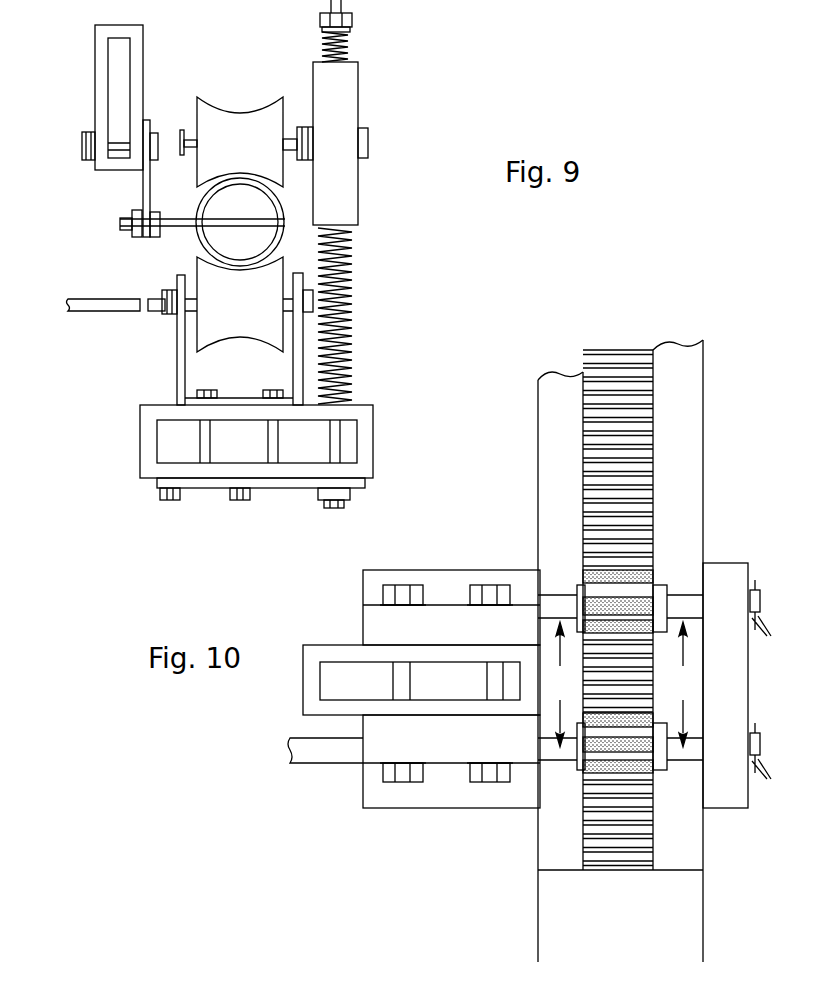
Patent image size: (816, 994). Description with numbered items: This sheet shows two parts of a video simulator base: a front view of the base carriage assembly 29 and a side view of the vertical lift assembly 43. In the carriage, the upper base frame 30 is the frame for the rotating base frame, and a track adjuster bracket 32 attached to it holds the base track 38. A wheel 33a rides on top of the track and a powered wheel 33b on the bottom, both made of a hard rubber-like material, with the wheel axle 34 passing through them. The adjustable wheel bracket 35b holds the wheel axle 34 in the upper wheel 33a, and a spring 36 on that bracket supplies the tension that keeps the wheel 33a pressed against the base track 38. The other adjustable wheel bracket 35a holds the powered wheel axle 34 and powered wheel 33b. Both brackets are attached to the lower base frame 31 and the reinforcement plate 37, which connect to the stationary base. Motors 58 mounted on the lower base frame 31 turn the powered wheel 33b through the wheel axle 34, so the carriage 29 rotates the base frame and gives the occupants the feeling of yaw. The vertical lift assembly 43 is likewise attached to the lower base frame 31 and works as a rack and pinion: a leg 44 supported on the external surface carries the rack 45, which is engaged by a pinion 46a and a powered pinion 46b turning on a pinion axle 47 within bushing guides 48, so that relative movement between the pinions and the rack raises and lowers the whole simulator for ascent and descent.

In FIG. 9, the base carriage assembly 29 is at (394, 246).
In FIG. 9, the upper base frame 30 is at (145, 38).
In FIG. 9, the lower base frame 31 is at (140, 440).
In FIG. 10, the lower base frame 31 is at (340, 643).
In FIG. 9, the track adjuster bracket 32 is at (143, 193).
In FIG. 9, the wheel 33a is at (220, 108).
In FIG. 9, the powered wheel 33b is at (225, 340).
In FIG. 9, the wheel axle 34 is at (185, 132).
In FIG. 9, the adjustable wheel bracket 35a is at (175, 377).
In FIG. 9, the adjustable wheel bracket 35b is at (360, 115).
In FIG. 9, the spring 36 is at (352, 48).
In FIG. 9, the reinforcement plate 37 is at (165, 492).
In FIG. 9, the base track 38 is at (202, 208).
In FIG. 10, the vertical lift assembly 43 is at (473, 518).
In FIG. 10, the leg 44 is at (573, 460).
In FIG. 10, the rack 45 is at (653, 448).
In FIG. 10, the pinion 46a is at (653, 577).
In FIG. 10, the powered pinion 46b is at (652, 780).
In FIG. 10, the pinion axle 47 is at (305, 780).
In FIG. 10, the bushing guides 48 is at (460, 603).
In FIG. 9, the motors 58 is at (81, 310).
In FIG. 10, the motors 58 is at (295, 761).